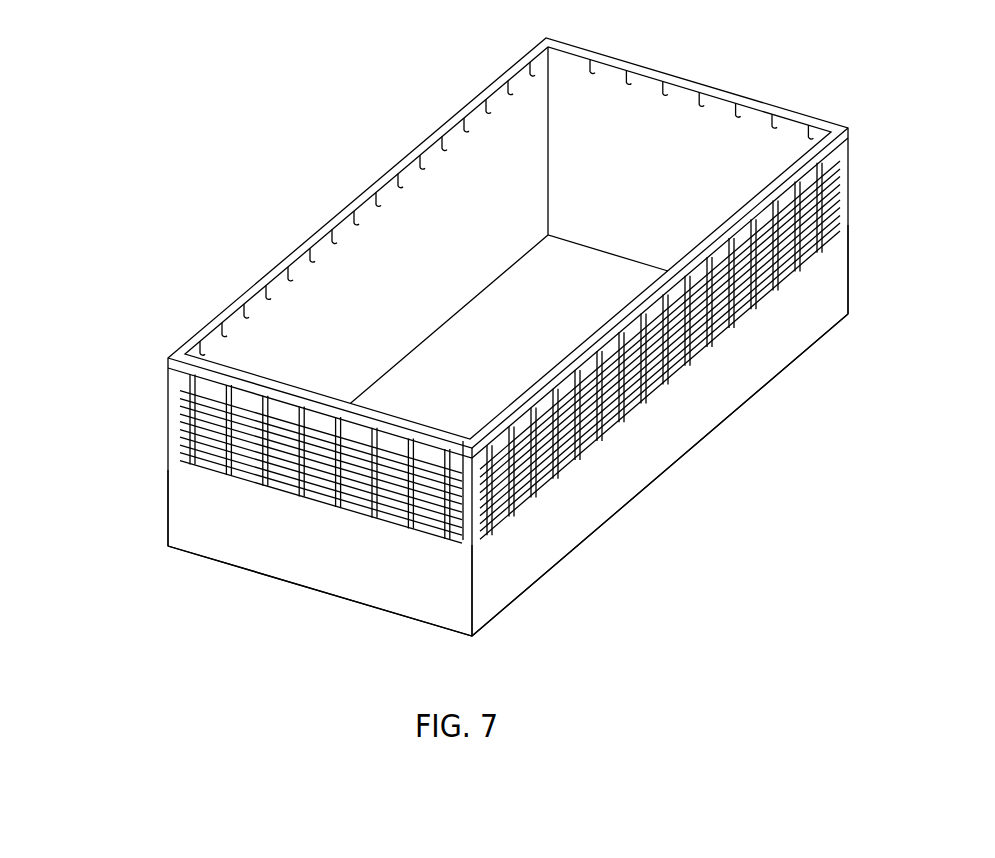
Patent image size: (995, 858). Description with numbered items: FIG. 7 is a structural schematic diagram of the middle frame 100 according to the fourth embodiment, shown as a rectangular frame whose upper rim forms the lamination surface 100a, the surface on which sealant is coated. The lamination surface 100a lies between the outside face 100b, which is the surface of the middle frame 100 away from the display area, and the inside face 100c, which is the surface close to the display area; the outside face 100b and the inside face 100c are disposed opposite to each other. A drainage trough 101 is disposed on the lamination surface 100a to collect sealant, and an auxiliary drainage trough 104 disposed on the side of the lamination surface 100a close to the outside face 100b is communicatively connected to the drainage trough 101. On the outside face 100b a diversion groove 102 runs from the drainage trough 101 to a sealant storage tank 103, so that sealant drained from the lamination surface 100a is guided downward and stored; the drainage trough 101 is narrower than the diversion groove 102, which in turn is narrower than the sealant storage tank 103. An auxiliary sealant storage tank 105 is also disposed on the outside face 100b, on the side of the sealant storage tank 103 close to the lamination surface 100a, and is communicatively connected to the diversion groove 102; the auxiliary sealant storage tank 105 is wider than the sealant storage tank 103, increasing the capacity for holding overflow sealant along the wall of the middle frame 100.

The middle frame 100 is at (114, 335).
The lamination surface 100a is at (240, 302).
The outside face 100b is at (198, 516).
The inside face 100c is at (290, 281).
The drainage trough 101 is at (215, 332).
The diversion groove 102 is at (182, 430).
The sealant storage tank 103 is at (182, 463).
The auxiliary drainage trough 104 is at (167, 362).
The auxiliary sealant storage tank 105 is at (182, 402).